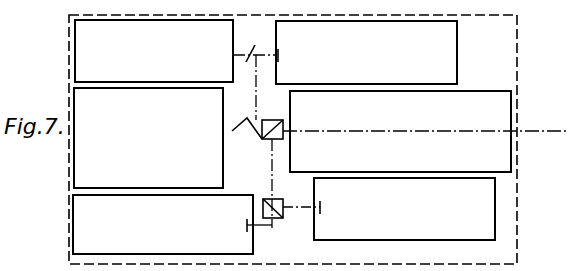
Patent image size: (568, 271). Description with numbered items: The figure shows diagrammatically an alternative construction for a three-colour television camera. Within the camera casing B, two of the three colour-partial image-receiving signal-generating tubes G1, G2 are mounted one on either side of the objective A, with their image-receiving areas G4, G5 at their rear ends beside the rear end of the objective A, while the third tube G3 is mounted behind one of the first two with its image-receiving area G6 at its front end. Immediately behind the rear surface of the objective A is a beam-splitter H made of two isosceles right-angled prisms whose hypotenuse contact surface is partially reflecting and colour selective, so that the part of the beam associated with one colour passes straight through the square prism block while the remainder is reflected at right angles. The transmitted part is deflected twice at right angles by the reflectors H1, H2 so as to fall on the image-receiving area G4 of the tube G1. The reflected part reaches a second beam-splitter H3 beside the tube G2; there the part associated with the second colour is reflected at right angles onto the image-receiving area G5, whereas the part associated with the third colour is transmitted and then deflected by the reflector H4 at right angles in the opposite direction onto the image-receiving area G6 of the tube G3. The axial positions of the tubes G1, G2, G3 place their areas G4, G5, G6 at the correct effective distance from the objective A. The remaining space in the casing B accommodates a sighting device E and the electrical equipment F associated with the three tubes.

The camera casing B is at (517, 60).
The sighting device E is at (80, 50).
The electrical equipment F is at (79, 146).
The objective A is at (495, 160).
The signal-generating tube G1 is at (366, 52).
The signal-generating tube G2 is at (404, 209).
The signal-generating tube G3 is at (79, 223).
The image-receiving area G4 is at (280, 56).
The image-receiving area G5 is at (322, 208).
The image-receiving area G6 is at (246, 226).
The beam-splitter H is at (271, 119).
The reflector H1 is at (233, 131).
The reflector H2 is at (249, 53).
The beam-splitter H3 is at (283, 200).
The reflector H4 is at (278, 221).